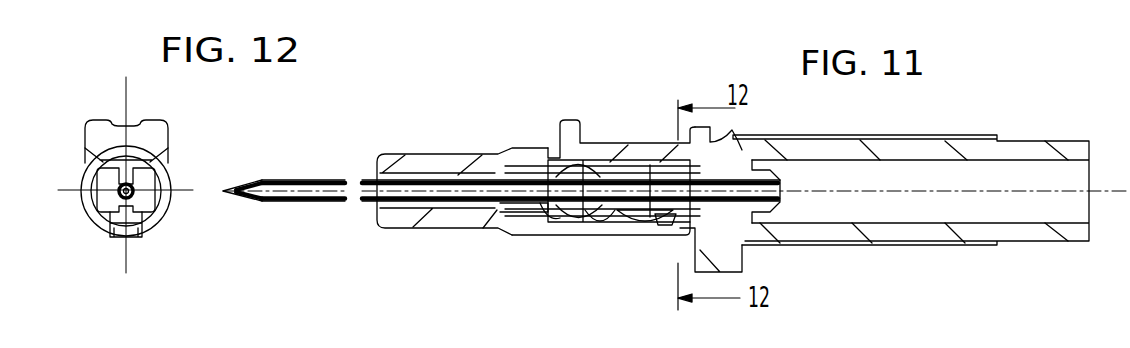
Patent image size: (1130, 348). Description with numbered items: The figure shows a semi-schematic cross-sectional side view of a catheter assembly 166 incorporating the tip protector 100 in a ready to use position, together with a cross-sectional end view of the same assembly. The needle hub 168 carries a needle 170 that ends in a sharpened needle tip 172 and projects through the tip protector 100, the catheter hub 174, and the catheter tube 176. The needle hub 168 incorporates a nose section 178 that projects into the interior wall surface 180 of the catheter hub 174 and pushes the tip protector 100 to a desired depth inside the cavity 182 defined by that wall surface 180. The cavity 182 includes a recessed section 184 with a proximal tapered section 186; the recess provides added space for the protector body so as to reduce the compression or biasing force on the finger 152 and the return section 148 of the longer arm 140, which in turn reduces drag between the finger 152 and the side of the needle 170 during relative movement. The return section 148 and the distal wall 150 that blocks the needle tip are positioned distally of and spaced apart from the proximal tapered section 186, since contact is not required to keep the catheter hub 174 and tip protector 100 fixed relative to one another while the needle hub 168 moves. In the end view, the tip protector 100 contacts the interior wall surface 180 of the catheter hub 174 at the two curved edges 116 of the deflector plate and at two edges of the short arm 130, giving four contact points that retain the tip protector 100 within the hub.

In FIG. 11, the tip protector 100 is at (647, 157).
In FIG. 12, the edges 116 is at (103, 160).
In FIG. 12, the arm 130 is at (136, 228).
In FIG. 11, the arm 130 is at (665, 232).
In FIG. 11, the arm 140 is at (598, 158).
In FIG. 11, the return section 148 is at (550, 224).
In FIG. 11, the distal wall 150 is at (540, 209).
In FIG. 11, the finger 152 is at (556, 194).
In FIG. 11, the catheter assembly 166 is at (458, 122).
In FIG. 11, the needle hub 168 is at (1001, 234).
In FIG. 11, the needle 170 is at (782, 182).
In FIG. 11, the needle tip 172 is at (237, 207).
In FIG. 12, the catheter hub 174 is at (176, 178).
In FIG. 11, the catheter hub 174 is at (430, 148).
In FIG. 11, the catheter tube 176 is at (326, 181).
In FIG. 11, the nose section 178 is at (728, 158).
In FIG. 11, the interior wall surface 180 is at (616, 230).
In FIG. 11, the cavity 182 is at (537, 172).
In FIG. 11, the recessed section 184 is at (548, 232).
In FIG. 11, the proximal tapered section 186 is at (587, 228).